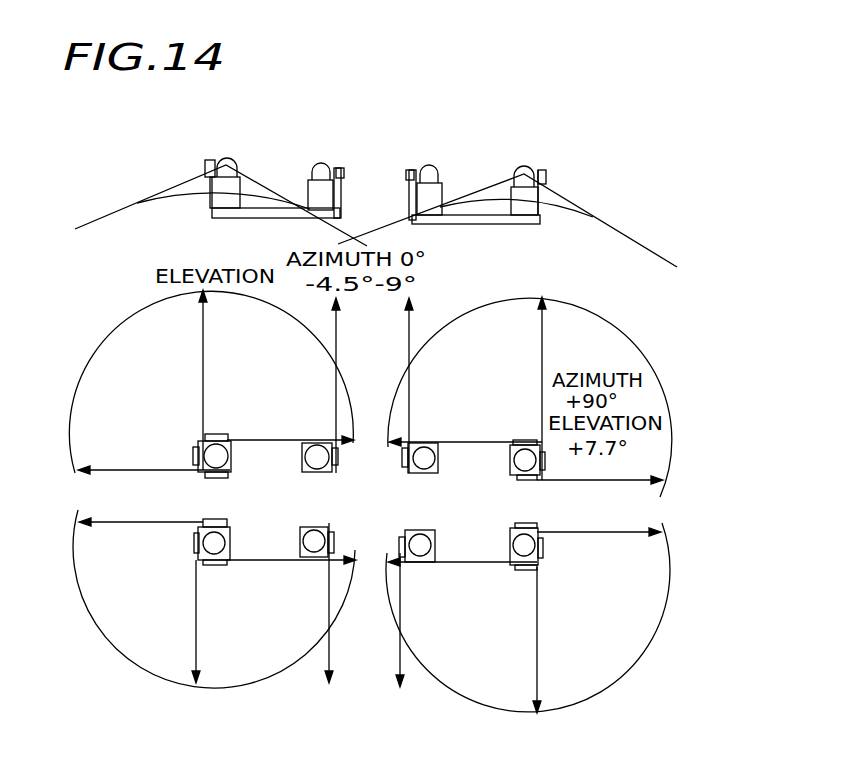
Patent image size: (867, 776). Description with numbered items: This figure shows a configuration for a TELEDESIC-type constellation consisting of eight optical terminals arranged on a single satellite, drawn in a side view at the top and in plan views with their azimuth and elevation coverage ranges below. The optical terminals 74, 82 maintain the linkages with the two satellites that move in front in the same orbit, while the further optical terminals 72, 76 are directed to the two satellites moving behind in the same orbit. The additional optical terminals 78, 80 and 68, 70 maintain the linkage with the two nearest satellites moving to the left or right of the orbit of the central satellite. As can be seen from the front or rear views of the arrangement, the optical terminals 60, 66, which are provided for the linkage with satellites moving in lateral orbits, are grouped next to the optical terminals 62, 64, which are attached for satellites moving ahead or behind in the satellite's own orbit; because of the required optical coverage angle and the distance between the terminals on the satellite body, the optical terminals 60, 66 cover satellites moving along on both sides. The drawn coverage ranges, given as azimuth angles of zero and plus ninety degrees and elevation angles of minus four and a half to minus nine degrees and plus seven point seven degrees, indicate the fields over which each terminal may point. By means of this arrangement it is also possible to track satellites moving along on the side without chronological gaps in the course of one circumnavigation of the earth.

The optical terminal 60 is at (527, 168).
The optical terminal 62 is at (430, 168).
The optical terminal 64 is at (319, 166).
The optical terminal 66 is at (226, 165).
The optical terminal 68 is at (522, 447).
The optical terminal 70 is at (538, 563).
The optical terminal 72 is at (423, 552).
The optical terminal 74 is at (435, 443).
The optical terminal 76 is at (315, 548).
The optical terminal 78 is at (207, 553).
The optical terminal 80 is at (212, 448).
The optical terminal 82 is at (305, 443).